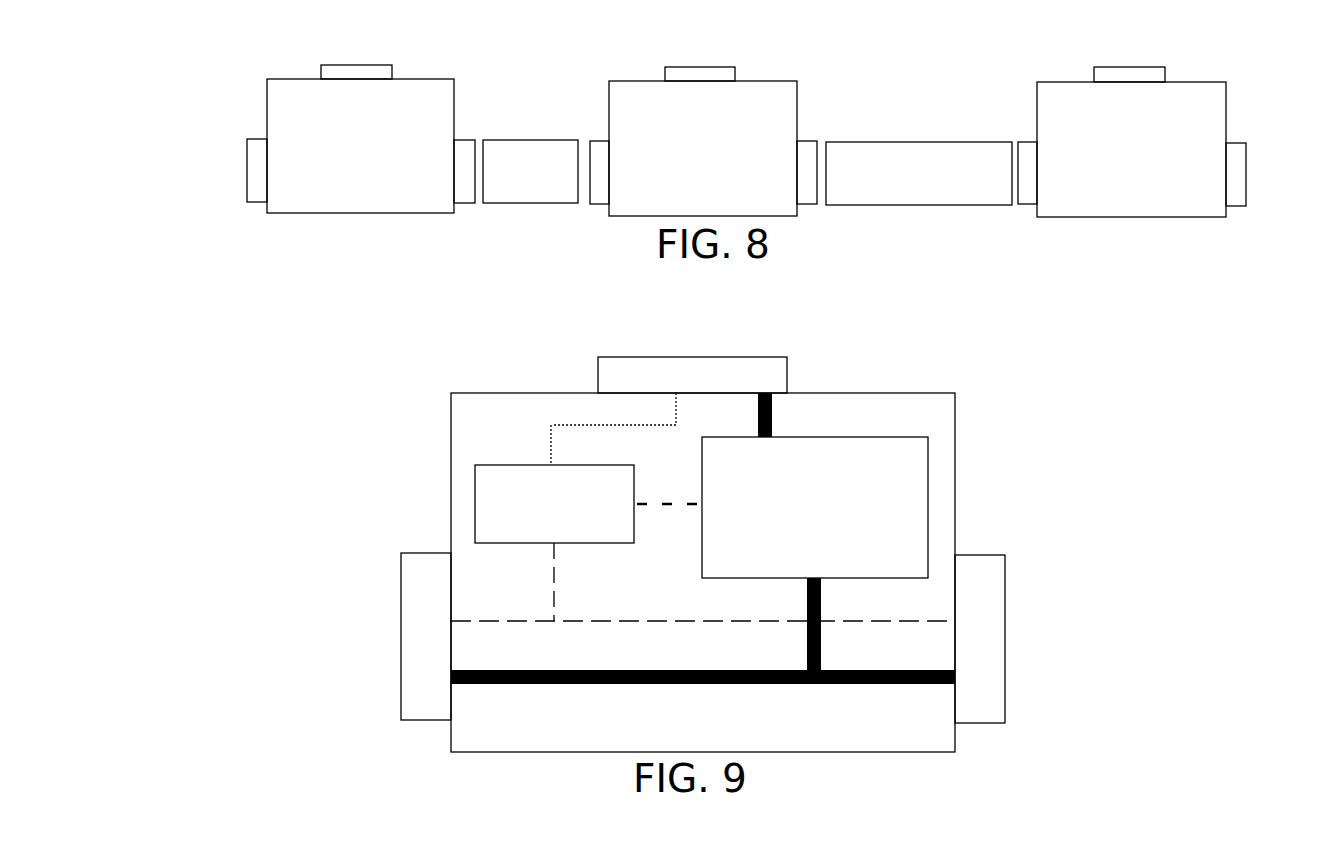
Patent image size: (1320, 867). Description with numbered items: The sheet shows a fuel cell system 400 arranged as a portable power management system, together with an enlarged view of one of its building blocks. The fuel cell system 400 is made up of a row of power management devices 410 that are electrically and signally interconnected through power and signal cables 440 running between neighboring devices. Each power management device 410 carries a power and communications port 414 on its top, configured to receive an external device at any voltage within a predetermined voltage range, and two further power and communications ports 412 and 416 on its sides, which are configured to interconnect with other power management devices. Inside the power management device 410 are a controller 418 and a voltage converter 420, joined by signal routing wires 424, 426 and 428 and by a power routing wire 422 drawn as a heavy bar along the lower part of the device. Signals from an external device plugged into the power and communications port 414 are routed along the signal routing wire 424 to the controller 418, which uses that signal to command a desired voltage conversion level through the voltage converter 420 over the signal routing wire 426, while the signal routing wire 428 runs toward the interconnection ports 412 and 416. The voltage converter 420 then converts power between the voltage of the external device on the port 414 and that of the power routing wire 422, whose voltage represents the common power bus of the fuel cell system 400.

In FIG. 8, the fuel cell system 400 is at (232, 68).
In FIG. 8, the power management device 410 is at (412, 79).
In FIG. 9, the power management device 410 is at (406, 396).
In FIG. 8, the power and signal cable 440 is at (501, 140).
In FIG. 9, the power and communications port 412 is at (401, 560).
In FIG. 9, the power and communications port 414 is at (787, 357).
In FIG. 9, the power and communications port 416 is at (1005, 556).
In FIG. 9, the controller 418 is at (475, 475).
In FIG. 9, the voltage converter 420 is at (928, 490).
In FIG. 9, the power routing wire 422 is at (885, 684).
In FIG. 9, the signal routing wire 424 is at (553, 425).
In FIG. 9, the signal routing wire 426 is at (678, 503).
In FIG. 9, the signal routing wire 428 is at (620, 620).